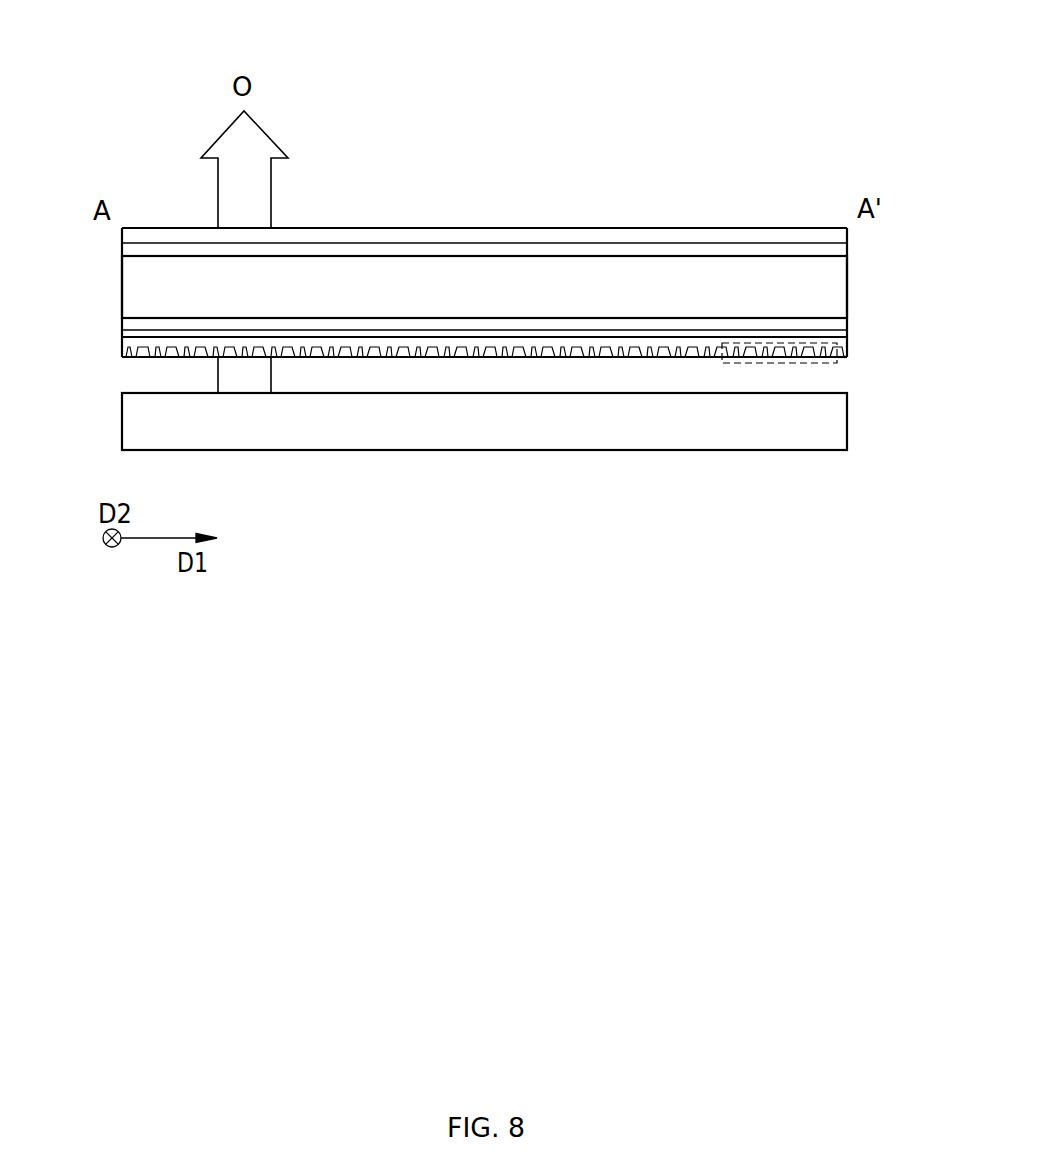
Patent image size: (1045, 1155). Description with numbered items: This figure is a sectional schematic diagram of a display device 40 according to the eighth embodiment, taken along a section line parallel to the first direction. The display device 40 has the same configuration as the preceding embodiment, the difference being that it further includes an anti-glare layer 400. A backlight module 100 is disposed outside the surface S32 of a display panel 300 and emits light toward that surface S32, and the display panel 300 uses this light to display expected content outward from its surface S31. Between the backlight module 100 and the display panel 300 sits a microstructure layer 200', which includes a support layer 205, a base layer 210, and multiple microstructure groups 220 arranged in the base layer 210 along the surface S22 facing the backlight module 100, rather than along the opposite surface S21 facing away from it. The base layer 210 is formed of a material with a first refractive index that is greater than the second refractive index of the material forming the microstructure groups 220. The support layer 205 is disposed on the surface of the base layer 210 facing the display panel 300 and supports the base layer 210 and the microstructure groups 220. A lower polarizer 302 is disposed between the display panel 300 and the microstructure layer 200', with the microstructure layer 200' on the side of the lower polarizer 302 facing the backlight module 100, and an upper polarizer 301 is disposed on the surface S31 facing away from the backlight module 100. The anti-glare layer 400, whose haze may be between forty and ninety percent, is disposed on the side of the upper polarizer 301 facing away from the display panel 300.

The display device 40 is at (140, 28).
The backlight module 100 is at (510, 437).
The microstructure layer 200' is at (536, 454).
The support layer 205 is at (700, 334).
The base layer 210 is at (842, 342).
The microstructure groups 220 is at (810, 363).
The display panel 300 is at (510, 300).
The upper polarizer 301 is at (840, 250).
The lower polarizer 302 is at (840, 323).
The anti-glare layer 400 is at (840, 235).
The surface of the microstructure layer facing away from the backlight module S21 is at (152, 328).
The surface of the base layer facing the backlight module S22 is at (150, 360).
The surface of the display panel facing away from the backlight module S31 is at (556, 255).
The surface of the display panel facing the backlight module S32 is at (620, 323).